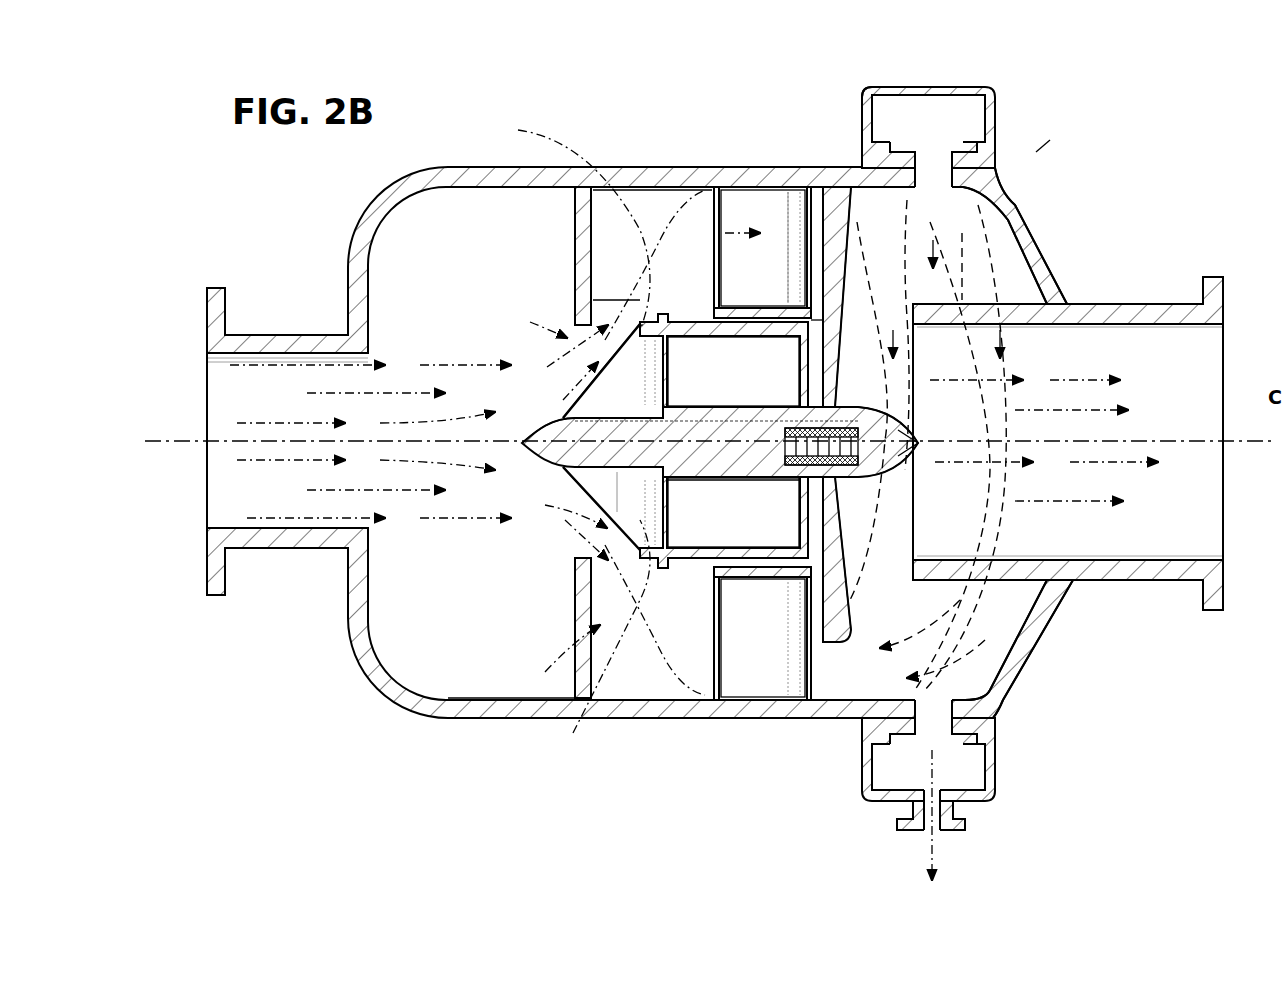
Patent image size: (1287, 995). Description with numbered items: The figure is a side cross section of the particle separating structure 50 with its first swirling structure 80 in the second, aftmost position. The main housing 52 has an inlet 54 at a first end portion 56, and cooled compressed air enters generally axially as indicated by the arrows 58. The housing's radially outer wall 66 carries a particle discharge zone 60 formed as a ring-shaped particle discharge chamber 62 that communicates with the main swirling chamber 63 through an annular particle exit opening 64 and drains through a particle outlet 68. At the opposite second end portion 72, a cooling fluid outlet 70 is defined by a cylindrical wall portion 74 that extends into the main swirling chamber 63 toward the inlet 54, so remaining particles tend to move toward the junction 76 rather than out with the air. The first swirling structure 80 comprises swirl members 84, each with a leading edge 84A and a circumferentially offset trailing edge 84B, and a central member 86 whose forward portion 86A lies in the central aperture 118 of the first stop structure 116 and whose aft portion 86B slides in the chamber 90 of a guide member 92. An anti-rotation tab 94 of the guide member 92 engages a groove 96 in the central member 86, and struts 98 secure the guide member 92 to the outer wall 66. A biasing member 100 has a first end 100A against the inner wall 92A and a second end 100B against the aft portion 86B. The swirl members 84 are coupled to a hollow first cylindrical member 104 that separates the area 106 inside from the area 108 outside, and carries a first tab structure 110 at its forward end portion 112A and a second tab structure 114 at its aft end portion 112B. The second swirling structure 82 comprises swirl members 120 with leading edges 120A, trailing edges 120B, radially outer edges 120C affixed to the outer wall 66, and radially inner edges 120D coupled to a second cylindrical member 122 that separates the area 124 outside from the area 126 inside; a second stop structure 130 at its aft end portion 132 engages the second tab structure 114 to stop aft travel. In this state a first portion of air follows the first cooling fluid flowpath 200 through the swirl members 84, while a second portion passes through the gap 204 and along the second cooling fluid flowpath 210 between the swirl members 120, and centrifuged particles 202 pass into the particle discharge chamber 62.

The particle separating structure 50 is at (1035, 152).
The main housing 52 is at (345, 250).
The inlet 54 is at (227, 380).
The first end portion 56 is at (285, 335).
The arrows 58 is at (247, 423).
The particle discharge zone 60 is at (968, 88).
The particle discharge chamber 62 is at (866, 110).
The main swirling chamber 63 is at (965, 266).
The particle exit opening 64 is at (930, 140).
The radially outer wall 66 is at (610, 185).
The particle outlet 68 is at (936, 817).
The cooling fluid outlet 70 is at (1224, 330).
The second end portion 72 is at (1127, 304).
The cylindrical wall portion 74 is at (1004, 563).
The junction 76 is at (1046, 262).
The first swirling structure 80 is at (605, 562).
The second swirling structure 82 is at (710, 215).
The swirl members 84 is at (646, 393).
The leading edge 84A is at (585, 405).
The trailing edge 84B is at (612, 415).
The central member 86 is at (667, 512).
The forward portion 86A is at (562, 430).
The aft portion 86B is at (736, 498).
The chamber 90 is at (838, 497).
The guide member 92 is at (940, 476).
The inner wall 92A is at (926, 500).
The anti-rotation tab 94 is at (690, 410).
The groove 96 is at (668, 392).
The struts 98 is at (843, 278).
The biasing member 100 is at (803, 485).
The first end 100A is at (878, 430).
The second end 100B is at (748, 366).
The first cylindrical member 104 is at (655, 322).
The area inside of the first cylindrical member 106 is at (689, 566).
The area outside of the first cylindrical member 108 is at (575, 682).
The first tab structure 110 is at (575, 622).
The forward end portion 112A is at (632, 480).
The aft end portion 112B is at (725, 600).
The second tab structure 114 is at (762, 305).
The first stop structure 116 is at (575, 230).
The central aperture 118 is at (575, 300).
The swirl members 120 is at (773, 197).
The leading edge 120A is at (712, 210).
The trailing edge 120B is at (862, 212).
The radially outer edges 120C is at (795, 185).
The radially inner edges 120D is at (713, 283).
The second cylindrical member 122 is at (792, 298).
The area outside of the second cylindrical member 124 is at (846, 250).
The area inside of the second cylindrical member 126 is at (764, 352).
The second stop structure 130 is at (806, 620).
The aft end portion 132 is at (700, 657).
The first cooling fluid flowpath 200 is at (585, 365).
The particles 202 is at (882, 118).
The gap 204 is at (600, 335).
The second cooling fluid flowpath 210 is at (564, 435).